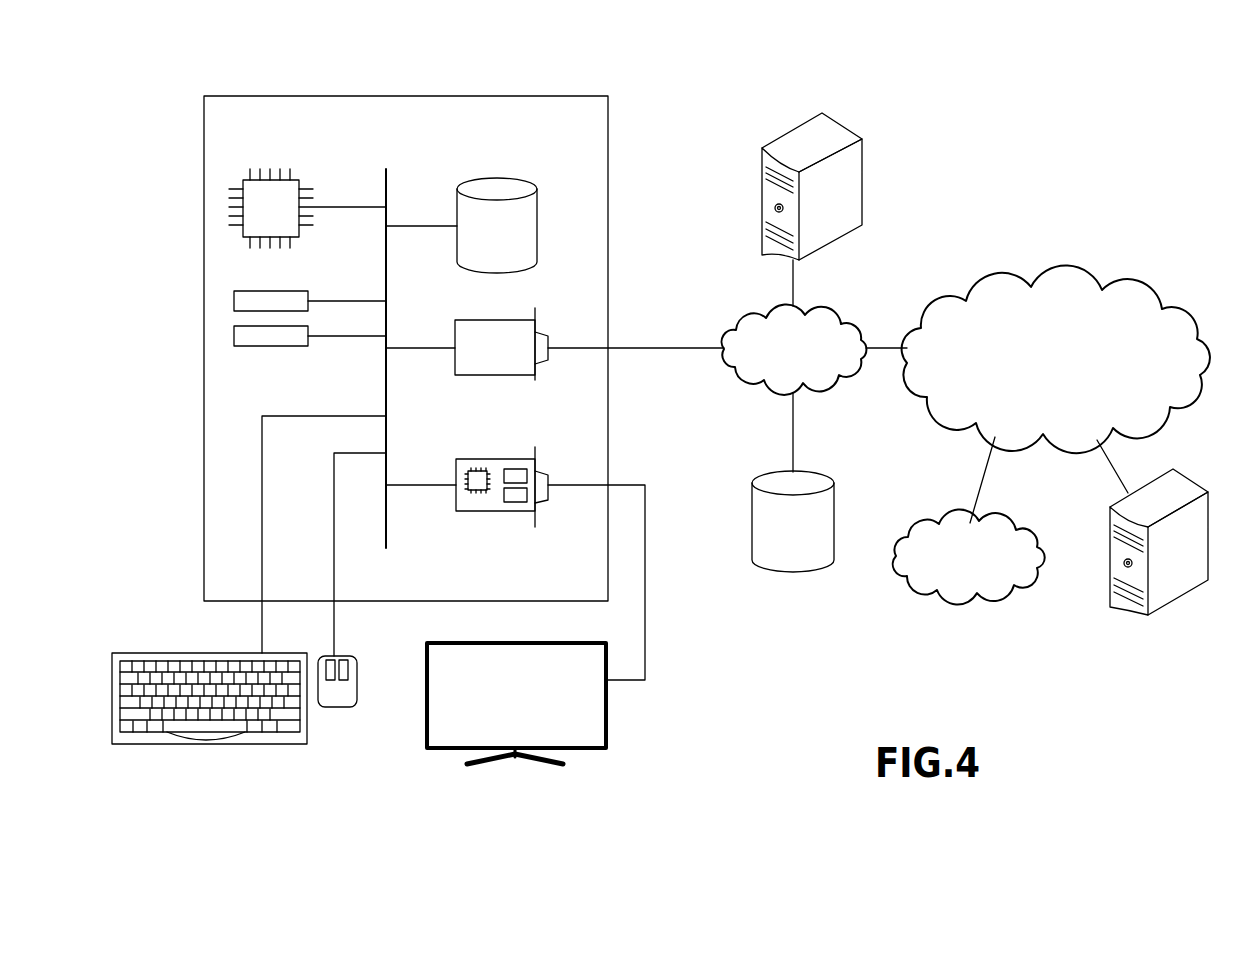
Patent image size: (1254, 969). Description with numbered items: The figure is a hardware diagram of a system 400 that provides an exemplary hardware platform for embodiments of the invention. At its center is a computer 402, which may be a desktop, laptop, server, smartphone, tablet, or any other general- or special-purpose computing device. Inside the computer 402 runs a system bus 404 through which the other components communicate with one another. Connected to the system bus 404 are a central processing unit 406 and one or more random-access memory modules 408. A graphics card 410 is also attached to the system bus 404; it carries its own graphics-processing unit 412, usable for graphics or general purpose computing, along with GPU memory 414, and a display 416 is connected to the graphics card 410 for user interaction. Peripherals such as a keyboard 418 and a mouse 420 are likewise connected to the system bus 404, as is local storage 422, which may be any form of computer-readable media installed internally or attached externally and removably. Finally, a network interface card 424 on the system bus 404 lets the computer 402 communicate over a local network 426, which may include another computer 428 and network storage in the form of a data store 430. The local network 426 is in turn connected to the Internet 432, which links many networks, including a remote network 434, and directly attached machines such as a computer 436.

The system 400 is at (271, 55).
The computer 402 is at (563, 96).
The system bus 404 is at (388, 180).
The central processing unit 406 is at (297, 178).
The random-access memory modules 408 is at (310, 300).
The graphics card 410 is at (515, 547).
The graphics-processing unit 412 is at (478, 491).
The GPU memory 414 is at (513, 501).
The display 416 is at (608, 731).
The keyboard 418 is at (213, 745).
The mouse 420 is at (335, 707).
The local storage 422 is at (540, 210).
The network interface card 424 is at (455, 331).
The local network 426 is at (845, 305).
The computer 428 is at (848, 121).
The data store 430 is at (825, 476).
The Internet 432 is at (1095, 265).
The remote network 434 is at (1022, 524).
The computer 436 is at (1185, 477).